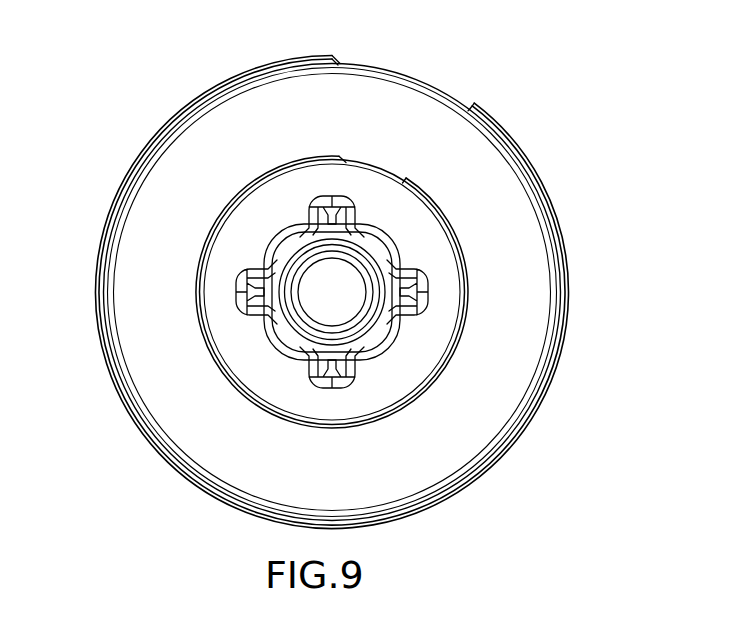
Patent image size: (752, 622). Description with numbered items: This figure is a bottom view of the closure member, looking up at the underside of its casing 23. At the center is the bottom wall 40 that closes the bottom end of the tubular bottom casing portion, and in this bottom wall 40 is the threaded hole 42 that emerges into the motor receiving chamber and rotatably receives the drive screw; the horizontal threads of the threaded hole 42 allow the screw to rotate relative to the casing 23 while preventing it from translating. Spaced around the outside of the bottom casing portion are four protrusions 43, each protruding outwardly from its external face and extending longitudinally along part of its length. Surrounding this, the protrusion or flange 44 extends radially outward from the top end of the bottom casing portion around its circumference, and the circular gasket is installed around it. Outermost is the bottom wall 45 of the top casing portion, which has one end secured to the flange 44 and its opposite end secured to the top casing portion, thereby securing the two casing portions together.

The casing 23 is at (205, 93).
The bottom wall 40 is at (407, 207).
The threaded hole 42 is at (343, 292).
The protrusions 43 is at (335, 210).
The protrusion or flange 44 is at (420, 372).
The bottom wall 45 is at (528, 278).